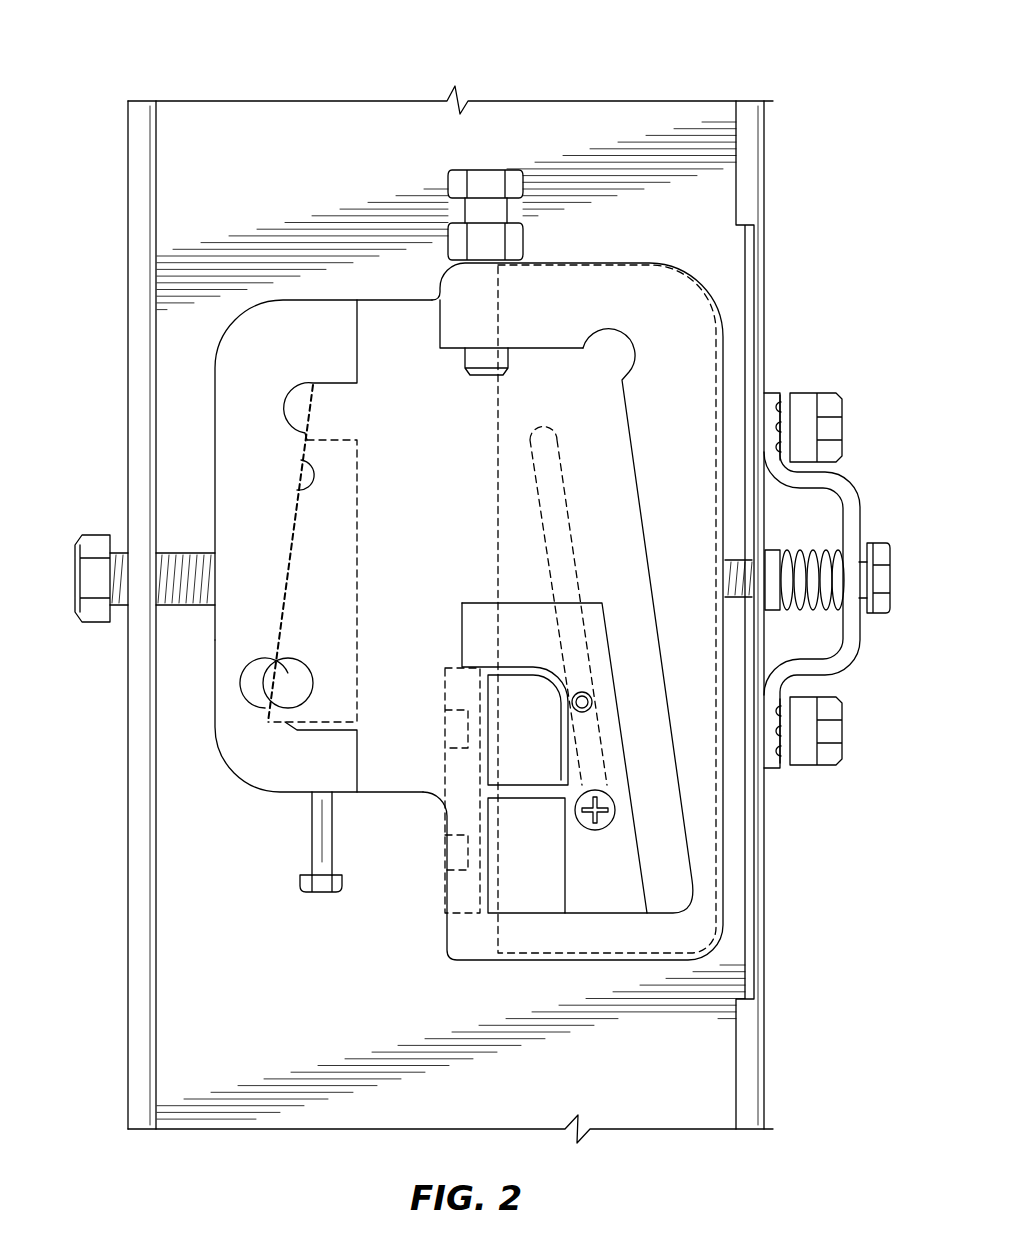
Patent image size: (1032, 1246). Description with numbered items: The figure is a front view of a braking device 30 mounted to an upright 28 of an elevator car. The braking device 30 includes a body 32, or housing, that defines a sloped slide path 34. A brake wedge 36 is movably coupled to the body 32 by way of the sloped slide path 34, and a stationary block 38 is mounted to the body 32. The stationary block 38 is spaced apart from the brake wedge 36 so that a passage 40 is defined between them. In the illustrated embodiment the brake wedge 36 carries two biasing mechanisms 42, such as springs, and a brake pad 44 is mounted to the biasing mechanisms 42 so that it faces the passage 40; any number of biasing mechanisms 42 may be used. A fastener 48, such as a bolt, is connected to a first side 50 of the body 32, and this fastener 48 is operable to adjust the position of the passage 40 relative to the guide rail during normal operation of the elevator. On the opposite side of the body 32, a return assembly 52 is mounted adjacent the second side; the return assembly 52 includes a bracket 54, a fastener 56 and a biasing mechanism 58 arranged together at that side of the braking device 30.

The upright 28 is at (590, 138).
The braking device 30 is at (834, 107).
The body 32 is at (677, 320).
The sloped slide path 34 is at (553, 472).
The brake wedge 36 is at (603, 882).
The stationary block 38 is at (323, 587).
The passage 40 is at (403, 528).
The biasing mechanism 42 is at (488, 883).
The brake pad 44 is at (457, 783).
The fastener 48 is at (88, 573).
The first side 50 is at (213, 703).
The return assembly 52 is at (866, 503).
The bracket 54 is at (855, 645).
The fastener 56 is at (880, 575).
The biasing mechanism 58 is at (803, 560).